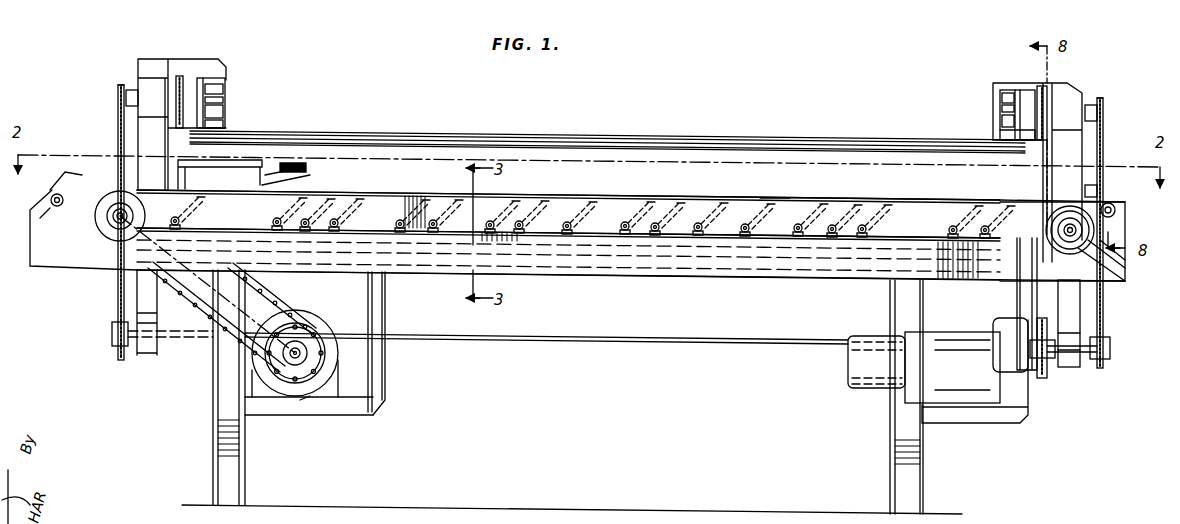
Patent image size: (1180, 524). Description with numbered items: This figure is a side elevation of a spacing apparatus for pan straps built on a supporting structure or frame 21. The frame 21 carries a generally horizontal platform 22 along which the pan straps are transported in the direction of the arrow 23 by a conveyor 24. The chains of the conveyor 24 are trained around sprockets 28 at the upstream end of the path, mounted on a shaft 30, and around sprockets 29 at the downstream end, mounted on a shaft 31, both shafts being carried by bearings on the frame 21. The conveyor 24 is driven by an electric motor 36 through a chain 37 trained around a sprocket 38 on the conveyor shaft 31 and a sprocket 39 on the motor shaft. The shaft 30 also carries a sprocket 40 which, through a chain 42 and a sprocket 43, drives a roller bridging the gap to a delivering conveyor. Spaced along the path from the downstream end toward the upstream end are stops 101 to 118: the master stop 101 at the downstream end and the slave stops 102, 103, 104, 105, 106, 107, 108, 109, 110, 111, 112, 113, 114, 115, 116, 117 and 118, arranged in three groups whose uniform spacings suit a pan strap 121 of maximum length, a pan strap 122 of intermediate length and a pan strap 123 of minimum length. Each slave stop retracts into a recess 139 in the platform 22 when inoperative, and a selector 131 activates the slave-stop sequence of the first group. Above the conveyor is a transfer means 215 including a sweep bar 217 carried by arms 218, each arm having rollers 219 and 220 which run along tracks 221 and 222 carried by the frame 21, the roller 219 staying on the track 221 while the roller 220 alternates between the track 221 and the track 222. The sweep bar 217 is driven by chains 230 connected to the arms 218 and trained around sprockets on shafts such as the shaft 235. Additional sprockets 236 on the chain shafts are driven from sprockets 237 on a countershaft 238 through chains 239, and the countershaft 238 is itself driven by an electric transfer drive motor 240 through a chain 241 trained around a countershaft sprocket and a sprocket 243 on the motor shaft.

The frame 21 is at (210, 425).
The platform 22 is at (640, 197).
The arrow 23 is at (772, 186).
The conveyor 24 is at (913, 197).
The sprockets 28 is at (1110, 262).
The sprockets 29 is at (92, 222).
The shaft 30 is at (1078, 231).
The shaft 31 is at (120, 221).
The electric motor 36 is at (335, 366).
The chain 37 is at (270, 306).
The sprocket 38 is at (104, 230).
The sprocket 39 is at (308, 398).
The sprocket 40 is at (1124, 282).
The chain 42 is at (1106, 193).
The sprocket 43 is at (1122, 210).
The master stop 101 is at (170, 212).
The slave stop 102 is at (275, 214).
The slave stop 103 is at (308, 207).
The slave stop 104 is at (360, 202).
The slave stop 105 is at (397, 214).
The slave stop 106 is at (436, 214).
The slave stop 107 is at (490, 212).
The slave stop 108 is at (522, 224).
The slave stop 109 is at (568, 212).
The slave stop 110 is at (624, 219).
The slave stop 111 is at (656, 213).
The slave stop 112 is at (700, 212).
The slave stop 113 is at (748, 224).
The slave stop 114 is at (800, 214).
The slave stop 115 is at (836, 212).
The slave stop 116 is at (866, 226).
The slave stop 117 is at (953, 214).
The slave stop 118 is at (986, 214).
The pan strap 121 is at (343, 142).
The pan strap 122 is at (313, 153).
The pan strap 123 is at (288, 146).
The selector 131 is at (56, 172).
The recess 139 is at (756, 198).
The transfer means 215 is at (513, 132).
The sweep bar 217 is at (598, 137).
The arms 218 is at (210, 78).
The roller 219 is at (224, 108).
The roller 220 is at (224, 92).
The track 221 is at (226, 122).
The track 222 is at (224, 100).
The chains 230 is at (180, 78).
The shaft 235 is at (129, 80).
The sprockets 236 is at (127, 98).
The sprockets 237 is at (112, 336).
The countershaft 238 is at (745, 346).
The chains 239 is at (119, 126).
The electric transfer drive motor 240 is at (868, 390).
The chain 241 is at (1043, 378).
The sprocket 243 is at (1040, 343).